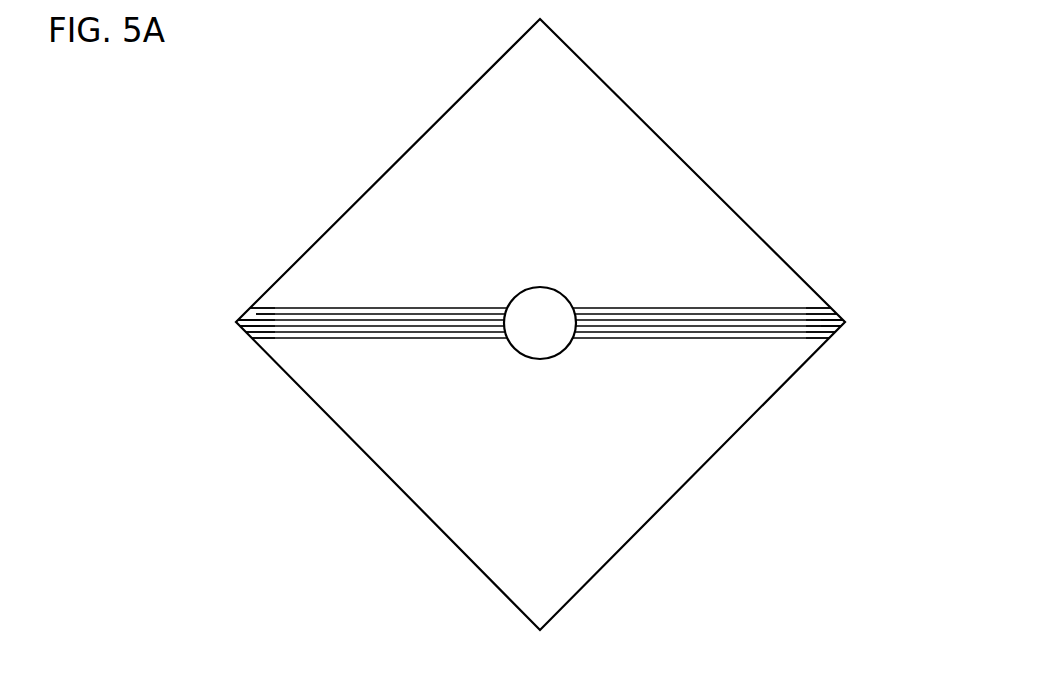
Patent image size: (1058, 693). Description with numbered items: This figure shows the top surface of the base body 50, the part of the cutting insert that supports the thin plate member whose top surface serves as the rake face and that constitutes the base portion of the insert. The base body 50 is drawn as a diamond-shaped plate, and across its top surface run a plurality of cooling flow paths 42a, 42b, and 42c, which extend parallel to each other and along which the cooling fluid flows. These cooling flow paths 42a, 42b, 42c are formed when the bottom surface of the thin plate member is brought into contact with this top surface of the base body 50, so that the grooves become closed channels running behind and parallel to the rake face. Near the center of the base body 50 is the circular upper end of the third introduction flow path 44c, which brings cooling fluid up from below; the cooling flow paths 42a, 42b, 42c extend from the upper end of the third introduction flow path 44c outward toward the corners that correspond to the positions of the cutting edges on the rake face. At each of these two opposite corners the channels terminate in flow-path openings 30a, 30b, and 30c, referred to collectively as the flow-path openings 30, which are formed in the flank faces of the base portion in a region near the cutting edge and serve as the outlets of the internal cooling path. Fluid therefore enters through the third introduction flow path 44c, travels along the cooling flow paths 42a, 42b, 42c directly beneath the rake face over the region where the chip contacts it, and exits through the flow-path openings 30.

The flow-path openings 30 is at (176, 268).
The flow-path opening 30a is at (237, 316).
The flow-path opening 30b is at (236, 322).
The flow-path opening 30c is at (237, 329).
The cooling flow path 42a is at (422, 311).
The cooling flow path 42b is at (375, 322).
The cooling flow path 42c is at (320, 337).
The third introduction flow path 44c is at (555, 298).
The base body 50 is at (610, 658).